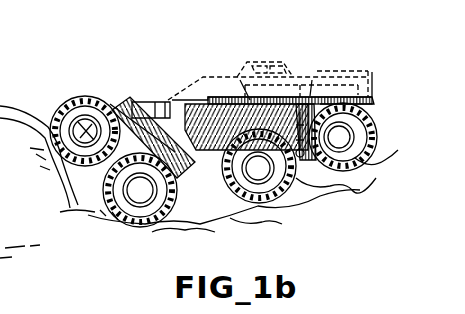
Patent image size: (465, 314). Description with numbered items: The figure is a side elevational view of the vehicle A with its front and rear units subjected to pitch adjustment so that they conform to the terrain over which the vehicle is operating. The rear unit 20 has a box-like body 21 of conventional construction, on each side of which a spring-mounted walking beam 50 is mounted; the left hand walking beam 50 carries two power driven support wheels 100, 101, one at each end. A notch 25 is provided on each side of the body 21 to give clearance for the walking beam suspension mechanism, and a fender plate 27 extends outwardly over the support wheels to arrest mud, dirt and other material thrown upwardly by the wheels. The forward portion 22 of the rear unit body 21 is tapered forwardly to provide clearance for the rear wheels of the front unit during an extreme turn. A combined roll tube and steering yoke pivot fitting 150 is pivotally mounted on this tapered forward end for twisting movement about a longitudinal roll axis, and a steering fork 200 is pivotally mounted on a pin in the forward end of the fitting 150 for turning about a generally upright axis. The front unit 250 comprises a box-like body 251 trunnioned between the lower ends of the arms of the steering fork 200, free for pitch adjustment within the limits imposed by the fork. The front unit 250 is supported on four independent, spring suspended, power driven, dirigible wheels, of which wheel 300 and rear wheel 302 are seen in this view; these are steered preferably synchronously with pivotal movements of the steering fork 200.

The rear unit 20 is at (6, 196).
The steering fork 200 is at (124, 100).
The combined roll tube and steering yoke pivot fitting 150 is at (160, 101).
The box-like body 251 is at (178, 166).
The forward portion 22 is at (197, 128).
The vehicle A is at (272, 60).
The box-like body 21 is at (232, 80).
The fender plate 27 is at (315, 92).
The notch 25 is at (300, 125).
The front unit 250 is at (78, 94).
The dirigible wheel 300 is at (56, 106).
The dirigible wheel 302 is at (148, 226).
The support wheel 100 is at (266, 214).
The walking beam 50 is at (332, 188).
The support wheel 101 is at (350, 178).